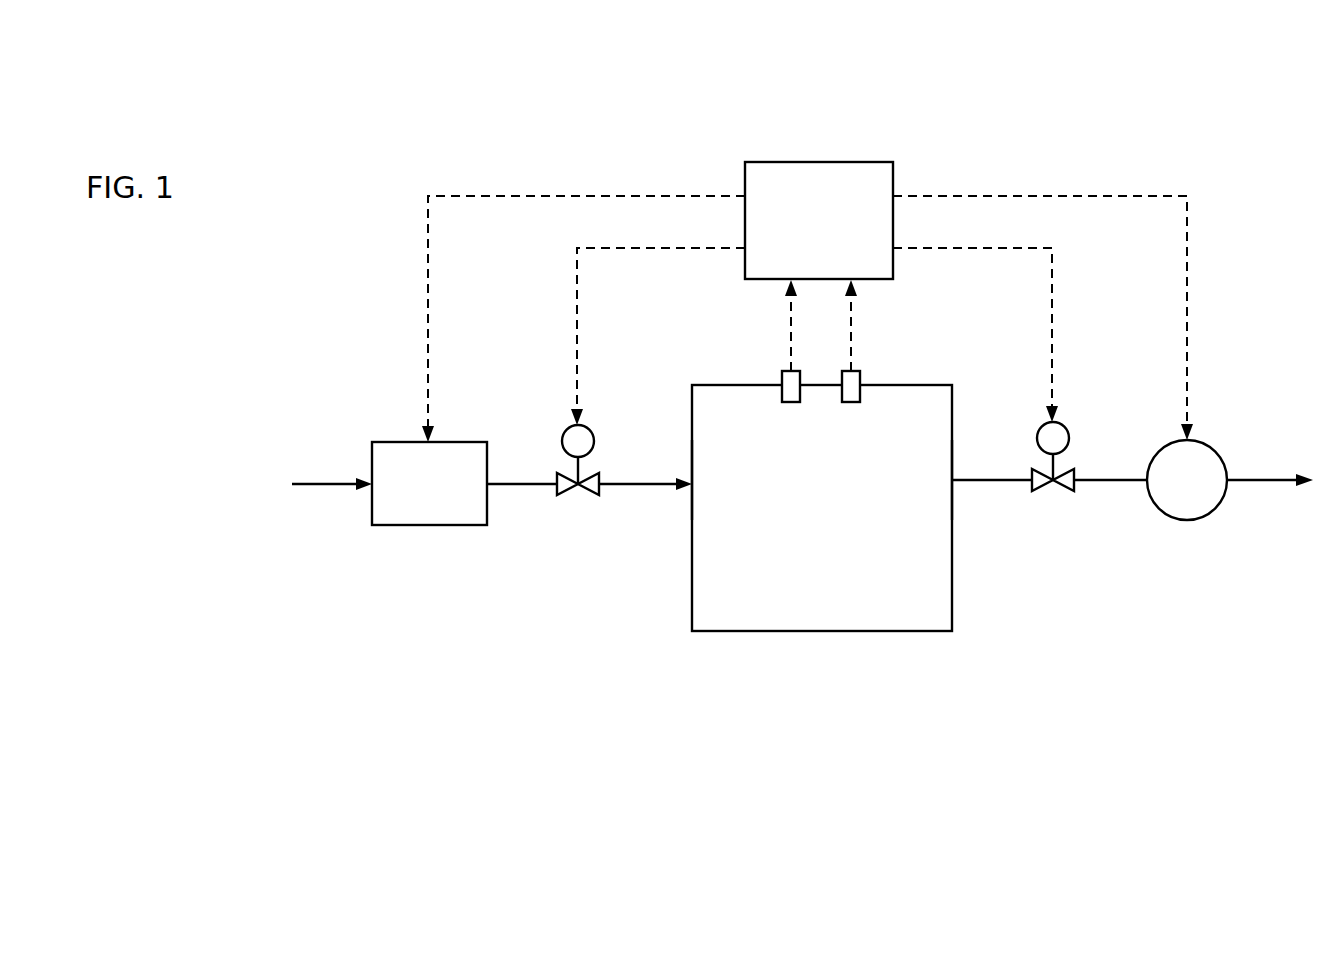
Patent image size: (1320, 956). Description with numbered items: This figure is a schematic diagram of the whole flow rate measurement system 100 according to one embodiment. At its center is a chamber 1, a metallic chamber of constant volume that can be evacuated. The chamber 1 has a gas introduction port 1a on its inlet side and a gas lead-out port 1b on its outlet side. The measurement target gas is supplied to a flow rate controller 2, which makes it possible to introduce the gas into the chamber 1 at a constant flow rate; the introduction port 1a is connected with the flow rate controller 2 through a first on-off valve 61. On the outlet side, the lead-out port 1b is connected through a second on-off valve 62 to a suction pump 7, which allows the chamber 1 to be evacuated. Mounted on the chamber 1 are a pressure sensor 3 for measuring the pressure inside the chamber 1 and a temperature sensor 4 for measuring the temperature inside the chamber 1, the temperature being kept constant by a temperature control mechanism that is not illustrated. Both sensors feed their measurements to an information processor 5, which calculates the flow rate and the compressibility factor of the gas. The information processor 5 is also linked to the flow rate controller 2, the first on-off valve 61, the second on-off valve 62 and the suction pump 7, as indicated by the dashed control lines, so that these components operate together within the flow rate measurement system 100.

The flow rate measurement system 100 is at (527, 116).
The chamber 1 is at (823, 632).
The gas introduction port 1a is at (692, 478).
The gas lead-out port 1b is at (952, 483).
The flow rate controller 2 is at (430, 527).
The pressure sensor 3 is at (782, 372).
The temperature sensor 4 is at (862, 372).
The information processor 5 is at (838, 162).
The first on-off valve 61 is at (585, 492).
The second on-off valve 62 is at (1060, 490).
The suction pump 7 is at (1187, 520).